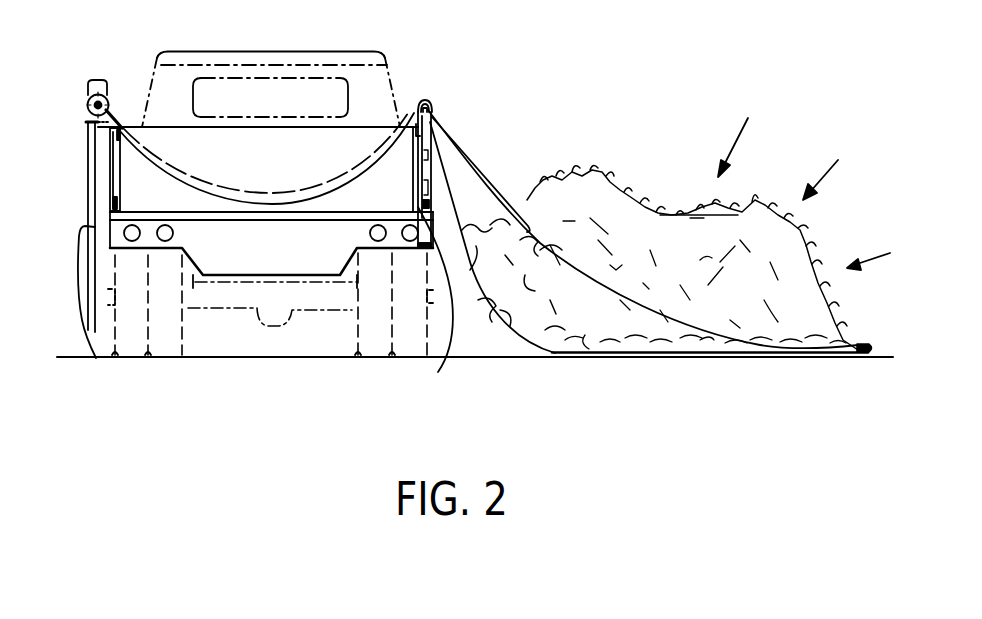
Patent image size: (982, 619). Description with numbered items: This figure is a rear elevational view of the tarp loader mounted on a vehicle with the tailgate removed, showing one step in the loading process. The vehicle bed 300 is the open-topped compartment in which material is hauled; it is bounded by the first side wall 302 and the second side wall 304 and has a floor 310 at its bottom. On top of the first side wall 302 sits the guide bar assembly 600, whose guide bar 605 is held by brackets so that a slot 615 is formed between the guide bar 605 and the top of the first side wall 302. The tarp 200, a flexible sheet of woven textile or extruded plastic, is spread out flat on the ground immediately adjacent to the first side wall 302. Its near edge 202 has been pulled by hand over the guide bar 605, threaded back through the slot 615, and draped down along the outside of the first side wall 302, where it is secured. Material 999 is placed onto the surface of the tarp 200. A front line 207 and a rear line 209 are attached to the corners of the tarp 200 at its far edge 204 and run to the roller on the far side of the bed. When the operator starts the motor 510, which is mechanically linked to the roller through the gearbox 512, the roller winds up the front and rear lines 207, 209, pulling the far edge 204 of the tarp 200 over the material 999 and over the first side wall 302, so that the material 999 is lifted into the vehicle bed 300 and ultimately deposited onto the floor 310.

The tarp 200 is at (563, 354).
The near edge 202 is at (446, 133).
The far edge 204 is at (871, 355).
The front line 207 is at (500, 200).
The rear line 209 is at (676, 325).
The vehicle bed 300 is at (301, 108).
The first side wall 302 is at (423, 302).
The second side wall 304 is at (96, 358).
The floor 310 is at (212, 201).
The motor 510 is at (98, 88).
The gearbox 512 is at (118, 121).
The guide bar assembly 600 is at (415, 86).
The guide bar 605 is at (427, 108).
The slot 615 is at (417, 127).
The material 999 is at (640, 238).